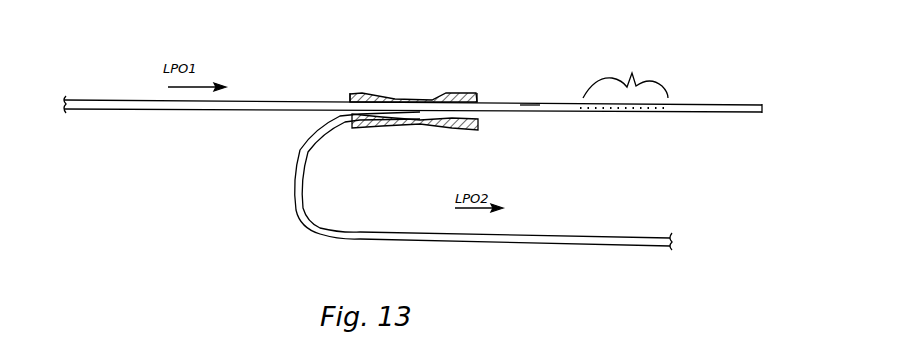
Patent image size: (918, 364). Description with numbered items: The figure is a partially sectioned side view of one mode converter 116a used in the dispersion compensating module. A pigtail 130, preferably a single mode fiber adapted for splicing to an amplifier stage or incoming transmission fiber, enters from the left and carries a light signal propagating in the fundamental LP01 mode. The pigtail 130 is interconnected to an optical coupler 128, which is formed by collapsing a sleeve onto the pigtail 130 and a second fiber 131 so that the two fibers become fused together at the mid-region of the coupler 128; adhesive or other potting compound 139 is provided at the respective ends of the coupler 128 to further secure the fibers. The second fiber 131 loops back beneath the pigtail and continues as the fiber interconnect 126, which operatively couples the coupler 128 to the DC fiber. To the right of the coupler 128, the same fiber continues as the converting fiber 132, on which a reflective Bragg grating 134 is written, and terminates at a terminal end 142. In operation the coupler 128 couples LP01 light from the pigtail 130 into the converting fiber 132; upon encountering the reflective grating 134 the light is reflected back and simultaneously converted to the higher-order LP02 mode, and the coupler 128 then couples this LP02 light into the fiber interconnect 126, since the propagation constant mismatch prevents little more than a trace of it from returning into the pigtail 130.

The mode converter 116a is at (244, 242).
The fiber interconnect 126 is at (586, 237).
The optical coupler 128 is at (390, 96).
The pigtail 130 is at (178, 112).
The fiber 131 is at (300, 160).
The converting fiber 132 is at (530, 104).
The reflective Bragg grating 134 is at (636, 66).
The adhesive or potting compound 139 is at (348, 93).
The terminal end 142 is at (763, 105).